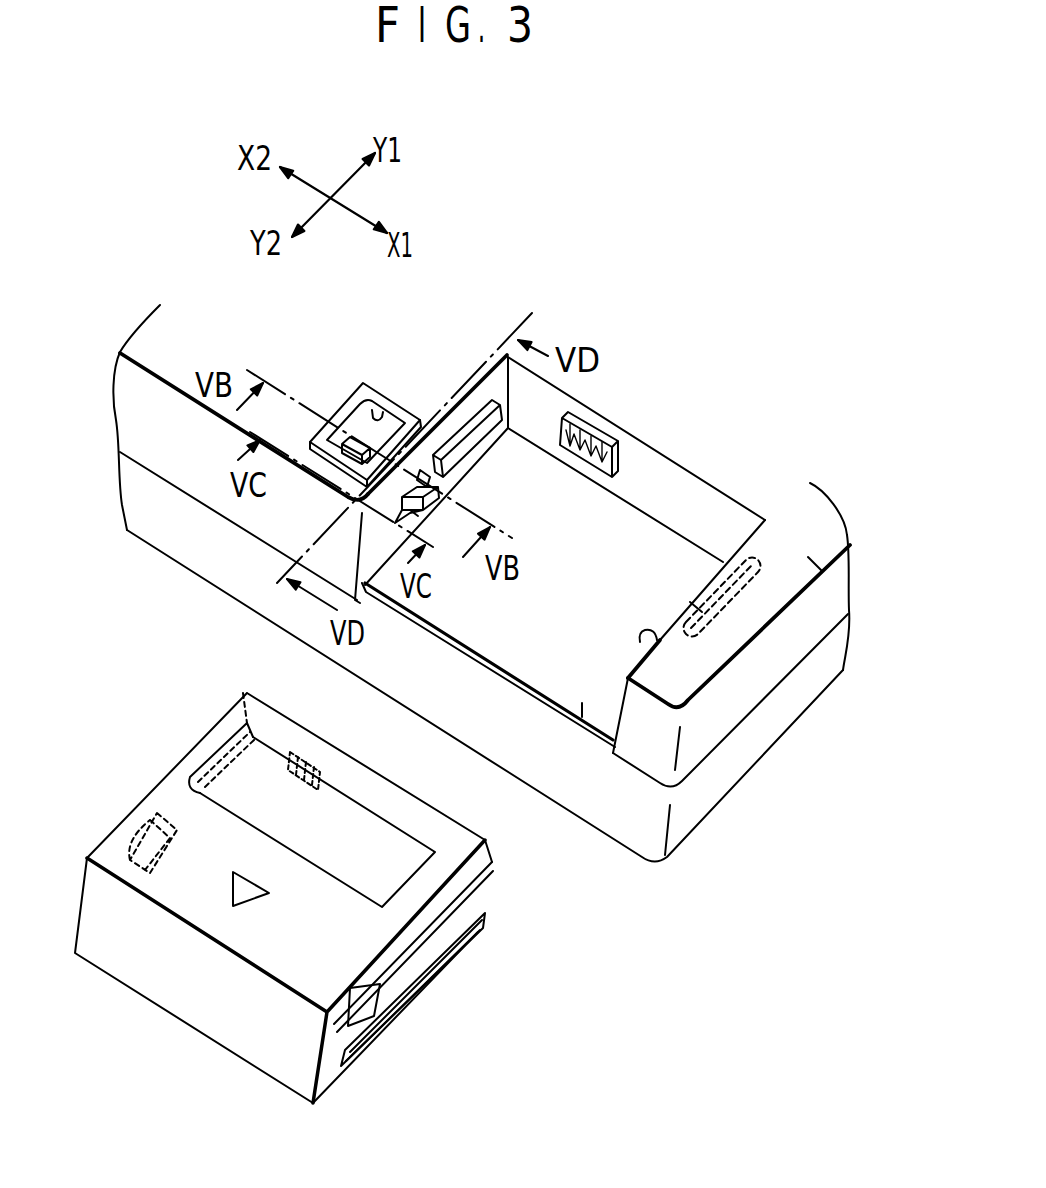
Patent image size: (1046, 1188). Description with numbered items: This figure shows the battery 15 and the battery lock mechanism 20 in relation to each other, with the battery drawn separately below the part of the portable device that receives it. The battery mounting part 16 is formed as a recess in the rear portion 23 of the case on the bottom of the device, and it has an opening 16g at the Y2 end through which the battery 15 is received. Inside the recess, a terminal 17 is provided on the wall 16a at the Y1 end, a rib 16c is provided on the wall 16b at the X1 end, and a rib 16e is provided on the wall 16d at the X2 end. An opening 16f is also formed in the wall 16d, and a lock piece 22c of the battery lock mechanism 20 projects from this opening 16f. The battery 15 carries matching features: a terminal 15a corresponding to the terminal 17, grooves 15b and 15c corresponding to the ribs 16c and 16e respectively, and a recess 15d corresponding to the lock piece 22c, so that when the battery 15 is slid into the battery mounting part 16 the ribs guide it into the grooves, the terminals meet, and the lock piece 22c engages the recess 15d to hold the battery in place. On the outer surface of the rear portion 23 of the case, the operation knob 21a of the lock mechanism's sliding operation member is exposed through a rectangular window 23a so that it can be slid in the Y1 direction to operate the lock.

The battery 15 is at (198, 1022).
The terminal 15a is at (320, 750).
The groove 15b is at (455, 905).
The groove 15c is at (185, 760).
The recess 15d is at (130, 812).
The battery mounting part 16 is at (685, 473).
The wall 16a is at (647, 463).
The wall 16b is at (657, 640).
The rib 16c is at (702, 608).
The wall 16d is at (477, 388).
The rib 16e is at (477, 437).
The opening 16f is at (410, 510).
The opening 16g is at (583, 703).
The terminal 17 is at (590, 433).
The battery lock mechanism 20 is at (345, 370).
The operation knob 21a is at (350, 440).
The lock piece 22c is at (438, 495).
The rear portion of the case 23 is at (825, 565).
The rectangular window 23a is at (378, 417).